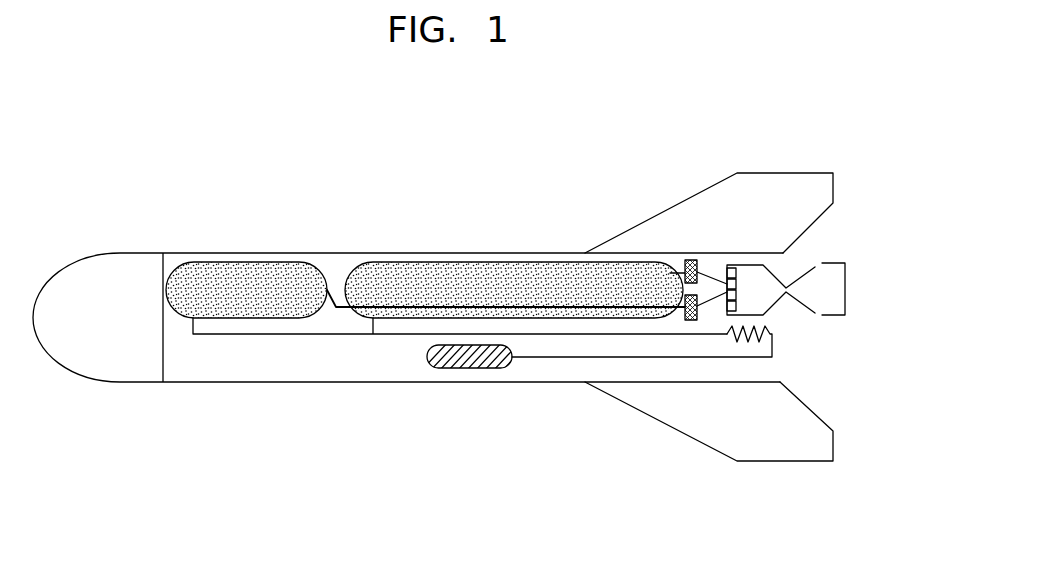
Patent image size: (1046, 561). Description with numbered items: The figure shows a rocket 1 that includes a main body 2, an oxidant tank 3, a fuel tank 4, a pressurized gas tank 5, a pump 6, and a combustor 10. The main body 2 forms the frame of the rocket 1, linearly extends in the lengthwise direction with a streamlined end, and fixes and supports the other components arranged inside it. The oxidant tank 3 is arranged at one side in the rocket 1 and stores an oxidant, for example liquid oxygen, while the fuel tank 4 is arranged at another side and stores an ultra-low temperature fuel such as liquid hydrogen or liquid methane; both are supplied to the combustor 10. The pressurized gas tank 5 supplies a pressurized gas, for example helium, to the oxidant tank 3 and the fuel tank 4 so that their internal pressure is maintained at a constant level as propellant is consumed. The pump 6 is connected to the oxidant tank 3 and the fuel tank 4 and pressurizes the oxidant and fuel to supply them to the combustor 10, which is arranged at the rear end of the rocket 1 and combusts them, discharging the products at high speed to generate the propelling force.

The rocket 1 is at (110, 126).
The main body 2 is at (341, 253).
The oxidant tank 3 is at (245, 265).
The fuel tank 4 is at (440, 265).
The pressurized gas tank 5 is at (684, 296).
The pump 6 is at (465, 369).
The combustor 10 is at (852, 236).